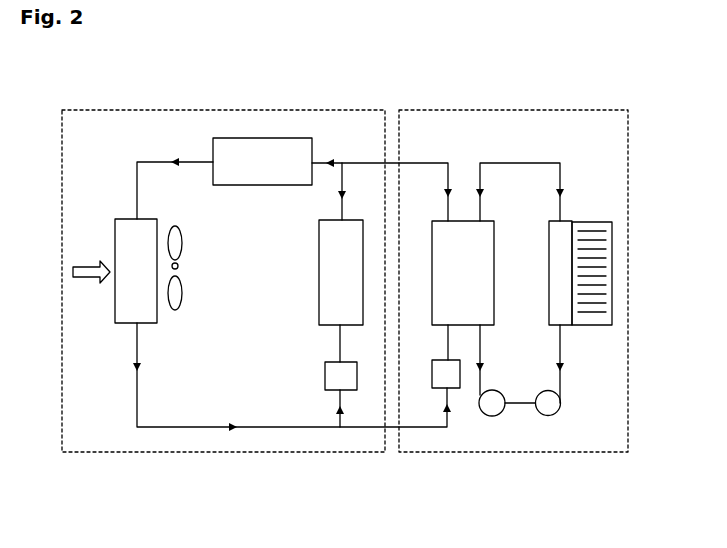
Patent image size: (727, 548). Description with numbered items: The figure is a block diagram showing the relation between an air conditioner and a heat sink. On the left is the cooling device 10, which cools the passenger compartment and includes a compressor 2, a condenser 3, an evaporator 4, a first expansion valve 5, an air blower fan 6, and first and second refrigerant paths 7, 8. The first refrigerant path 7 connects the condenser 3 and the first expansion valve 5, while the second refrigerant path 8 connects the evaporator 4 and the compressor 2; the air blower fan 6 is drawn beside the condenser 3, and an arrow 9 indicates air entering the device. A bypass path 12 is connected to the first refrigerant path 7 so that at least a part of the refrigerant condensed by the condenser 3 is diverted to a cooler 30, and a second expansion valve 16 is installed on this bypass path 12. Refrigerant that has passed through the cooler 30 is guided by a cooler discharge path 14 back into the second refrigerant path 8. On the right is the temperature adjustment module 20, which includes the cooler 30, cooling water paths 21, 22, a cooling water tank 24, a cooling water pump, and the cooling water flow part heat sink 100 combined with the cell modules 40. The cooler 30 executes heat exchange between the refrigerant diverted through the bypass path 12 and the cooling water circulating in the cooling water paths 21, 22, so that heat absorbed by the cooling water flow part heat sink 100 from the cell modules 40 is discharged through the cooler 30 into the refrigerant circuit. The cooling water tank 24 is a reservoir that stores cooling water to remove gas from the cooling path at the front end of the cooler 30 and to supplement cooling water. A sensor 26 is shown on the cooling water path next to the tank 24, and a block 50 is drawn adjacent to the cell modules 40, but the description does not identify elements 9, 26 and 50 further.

The compressor 2 is at (252, 138).
The condenser 3 is at (115, 308).
The evaporator 4 is at (319, 305).
The first expansion valve 5 is at (325, 378).
The air blower fan 6 is at (180, 266).
The first refrigerant path 7 is at (268, 428).
The second refrigerant path 8 is at (313, 163).
The air inlet 9 is at (91, 272).
The cooling device 10 is at (185, 110).
The bypass path 12 is at (427, 428).
The cooler discharge path 14 is at (362, 163).
The second expansion valve 16 is at (460, 389).
The temperature adjustment module 20 is at (586, 110).
The cooling water path 21 is at (518, 163).
The cooling water path 22 is at (520, 404).
The cooling water tank 24 is at (548, 416).
The pressure sensor 26 is at (495, 416).
The cooler 30 is at (432, 221).
The cell modules 40 is at (607, 213).
The housing 50 is at (612, 245).
The cooling water flow part heat sink 100 is at (556, 265).